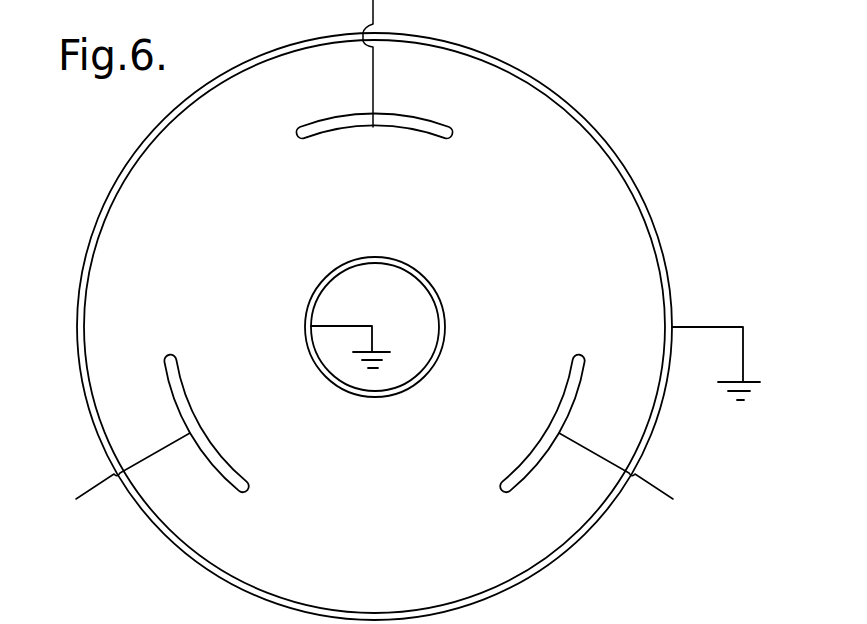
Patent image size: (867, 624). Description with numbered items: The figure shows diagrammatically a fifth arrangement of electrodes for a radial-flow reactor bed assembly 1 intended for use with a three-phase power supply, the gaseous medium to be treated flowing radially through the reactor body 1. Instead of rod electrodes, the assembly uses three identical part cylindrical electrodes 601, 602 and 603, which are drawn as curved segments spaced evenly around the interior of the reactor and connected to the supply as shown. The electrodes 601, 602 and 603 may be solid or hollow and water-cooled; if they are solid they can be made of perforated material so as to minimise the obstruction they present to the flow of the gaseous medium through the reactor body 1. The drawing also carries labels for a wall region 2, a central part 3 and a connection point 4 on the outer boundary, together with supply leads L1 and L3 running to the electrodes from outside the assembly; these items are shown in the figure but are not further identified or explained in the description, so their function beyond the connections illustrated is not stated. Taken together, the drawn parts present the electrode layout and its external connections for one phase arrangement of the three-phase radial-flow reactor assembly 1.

The radial-flow reactor bed assembly 1 is at (623, 152).
The chamber wall 2 is at (625, 230).
The substrate electrode / wafer stage 3 is at (402, 276).
The grounded chamber electrode connection 4 is at (672, 291).
The part cylindrical electrode 601 is at (396, 123).
The part cylindrical electrode 602 is at (568, 401).
The part cylindrical electrode 603 is at (185, 413).
The power supply line L1 is at (382, 63).
The power supply line L3 is at (369, 466).